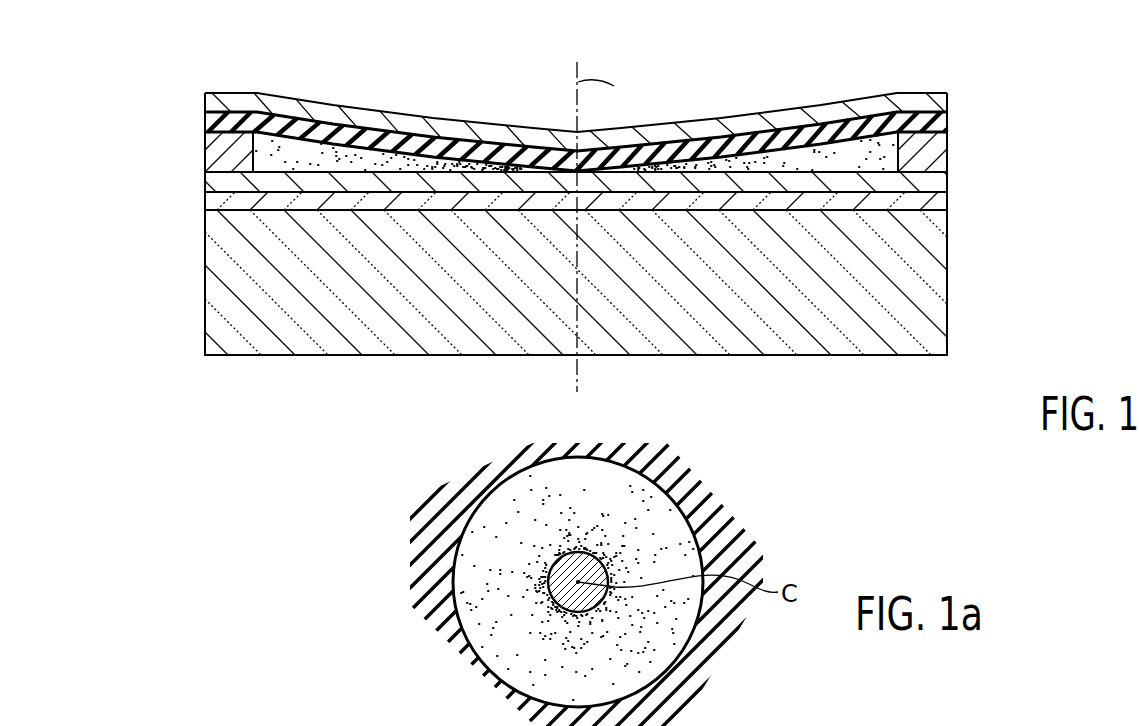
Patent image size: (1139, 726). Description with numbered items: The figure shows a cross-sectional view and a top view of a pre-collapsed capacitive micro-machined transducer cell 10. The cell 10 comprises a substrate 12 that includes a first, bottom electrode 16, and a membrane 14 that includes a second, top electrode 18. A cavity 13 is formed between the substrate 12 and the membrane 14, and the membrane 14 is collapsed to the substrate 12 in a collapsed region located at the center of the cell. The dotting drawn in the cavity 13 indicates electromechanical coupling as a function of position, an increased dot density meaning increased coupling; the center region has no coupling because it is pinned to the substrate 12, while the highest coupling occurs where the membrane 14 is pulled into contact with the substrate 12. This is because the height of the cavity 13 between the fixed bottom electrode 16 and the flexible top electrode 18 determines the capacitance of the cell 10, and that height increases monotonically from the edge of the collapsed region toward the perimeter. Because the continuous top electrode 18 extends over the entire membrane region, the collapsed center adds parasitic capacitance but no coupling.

The pre-collapsed capacitive micro-machined transducer cell 10 is at (639, 202).
The substrate 12 is at (618, 247).
The cavity 13 is at (385, 167).
The membrane 14 is at (947, 122).
The first (bottom) electrode 16 is at (600, 164).
The second (top) electrode 18 is at (438, 125).